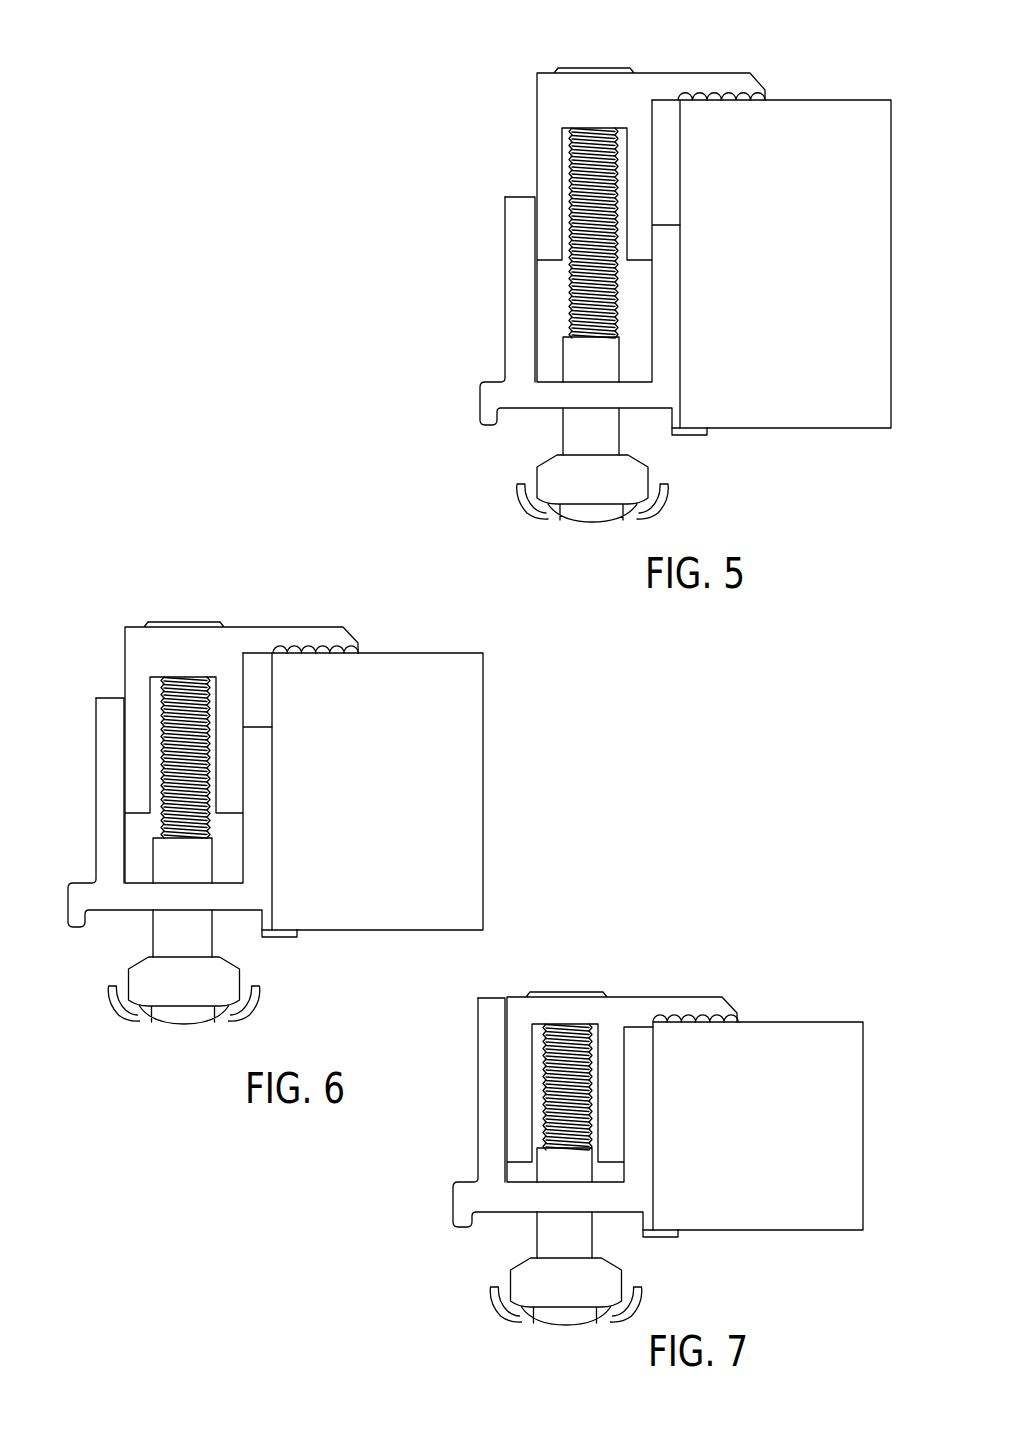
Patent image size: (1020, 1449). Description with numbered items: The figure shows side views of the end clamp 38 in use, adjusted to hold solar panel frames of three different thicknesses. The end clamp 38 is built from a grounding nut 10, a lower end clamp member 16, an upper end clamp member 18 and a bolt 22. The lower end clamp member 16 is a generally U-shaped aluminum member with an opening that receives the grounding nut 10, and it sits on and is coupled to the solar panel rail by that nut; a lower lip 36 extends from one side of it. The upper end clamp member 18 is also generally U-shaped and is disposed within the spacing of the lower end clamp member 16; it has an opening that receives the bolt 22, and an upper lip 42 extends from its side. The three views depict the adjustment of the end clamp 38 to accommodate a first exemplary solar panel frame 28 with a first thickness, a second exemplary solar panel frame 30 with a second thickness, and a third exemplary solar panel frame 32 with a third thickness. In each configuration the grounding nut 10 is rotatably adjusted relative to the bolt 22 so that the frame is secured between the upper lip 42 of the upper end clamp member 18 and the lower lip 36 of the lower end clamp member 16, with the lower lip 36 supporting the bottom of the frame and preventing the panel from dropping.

In FIG. 5, the grounding nut 10 is at (533, 518).
In FIG. 6, the grounding nut 10 is at (135, 1018).
In FIG. 7, the grounding nut 10 is at (492, 1320).
In FIG. 5, the lower end clamp member 16 is at (510, 423).
In FIG. 6, the lower end clamp member 16 is at (110, 927).
In FIG. 7, the lower end clamp member 16 is at (482, 1226).
In FIG. 5, the upper end clamp member 18 is at (682, 70).
In FIG. 6, the upper end clamp member 18 is at (277, 626).
In FIG. 7, the upper end clamp member 18 is at (671, 991).
In FIG. 5, the bolt 22 is at (627, 313).
In FIG. 6, the bolt 22 is at (222, 812).
In FIG. 7, the bolt 22 is at (564, 1103).
In FIG. 5, the first exemplary solar panel frame 28 is at (812, 126).
In FIG. 6, the second exemplary solar panel frame 30 is at (424, 676).
In FIG. 7, the third exemplary solar panel frame 32 is at (815, 1051).
In FIG. 5, the lower lip 36 is at (692, 426).
In FIG. 6, the lower lip 36 is at (284, 928).
In FIG. 7, the lower lip 36 is at (667, 1228).
In FIG. 5, the end clamp 38 is at (487, 293).
In FIG. 6, the end clamp 38 is at (85, 765).
In FIG. 7, the end clamp 38 is at (450, 1128).
In FIG. 5, the upper lip 42 is at (733, 84).
In FIG. 6, the upper lip 42 is at (333, 638).
In FIG. 7, the upper lip 42 is at (720, 1011).